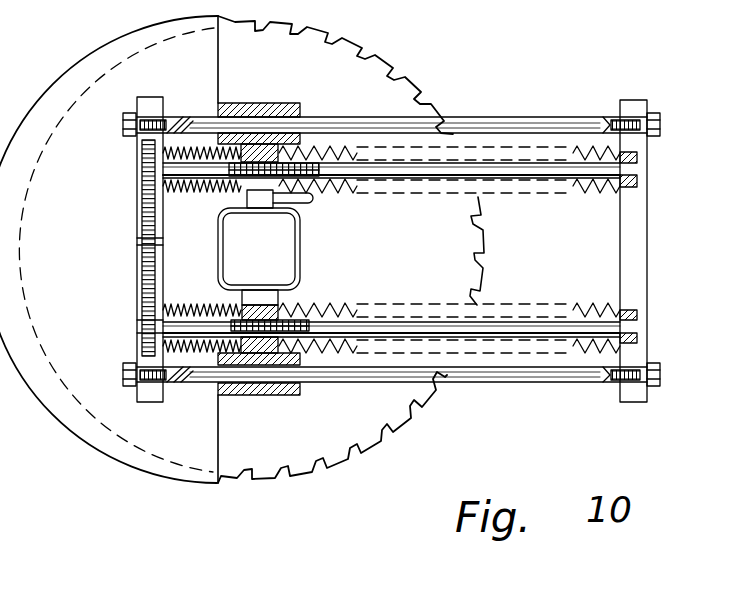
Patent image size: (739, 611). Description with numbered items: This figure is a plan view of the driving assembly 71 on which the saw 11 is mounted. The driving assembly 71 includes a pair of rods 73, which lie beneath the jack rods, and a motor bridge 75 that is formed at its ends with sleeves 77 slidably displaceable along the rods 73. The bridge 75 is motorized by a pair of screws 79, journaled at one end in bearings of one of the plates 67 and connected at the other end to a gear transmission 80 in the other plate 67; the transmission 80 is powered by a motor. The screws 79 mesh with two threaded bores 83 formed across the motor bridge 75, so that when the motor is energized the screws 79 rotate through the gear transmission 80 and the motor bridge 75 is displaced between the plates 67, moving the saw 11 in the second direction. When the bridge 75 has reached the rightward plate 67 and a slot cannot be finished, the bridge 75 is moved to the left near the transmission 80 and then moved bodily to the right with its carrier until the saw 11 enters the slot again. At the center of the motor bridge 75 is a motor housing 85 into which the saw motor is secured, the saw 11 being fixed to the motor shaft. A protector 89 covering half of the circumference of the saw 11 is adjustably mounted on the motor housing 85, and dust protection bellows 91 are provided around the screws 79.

The saw 11 is at (377, 72).
The plates 67 is at (632, 228).
The driving assembly 71 is at (478, 386).
The rods 73 is at (545, 115).
The motor bridge 75 is at (304, 262).
The sleeves 77 is at (272, 111).
The screws 79 is at (517, 168).
The gear transmission 80 is at (140, 195).
The threaded bores 83 is at (290, 133).
The motor housing 85 is at (277, 232).
The protector 89 is at (155, 77).
The dust protection bellows 91 is at (592, 297).